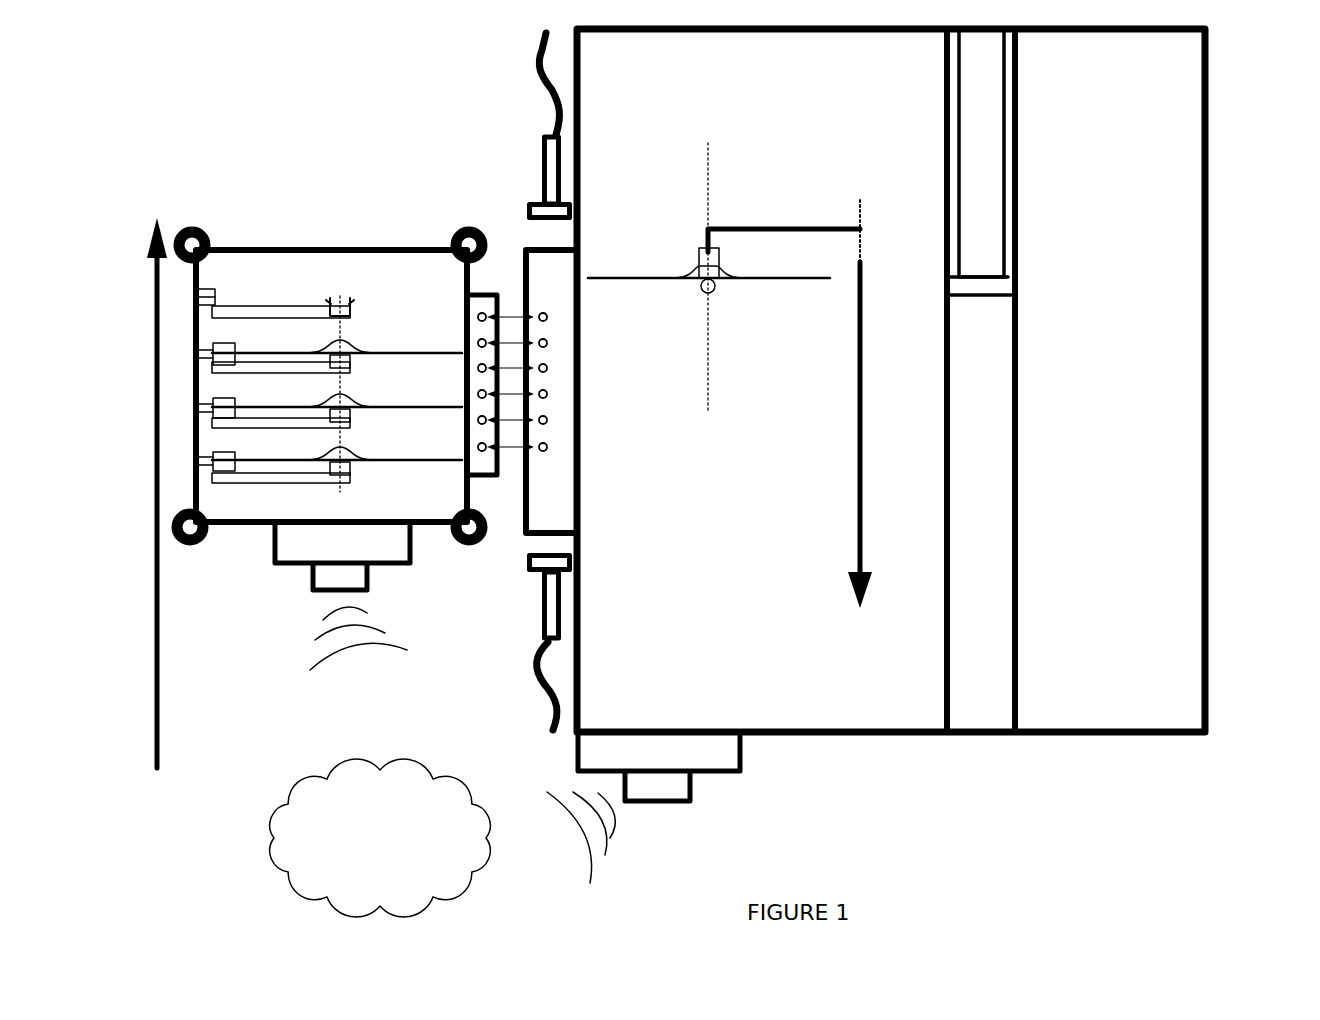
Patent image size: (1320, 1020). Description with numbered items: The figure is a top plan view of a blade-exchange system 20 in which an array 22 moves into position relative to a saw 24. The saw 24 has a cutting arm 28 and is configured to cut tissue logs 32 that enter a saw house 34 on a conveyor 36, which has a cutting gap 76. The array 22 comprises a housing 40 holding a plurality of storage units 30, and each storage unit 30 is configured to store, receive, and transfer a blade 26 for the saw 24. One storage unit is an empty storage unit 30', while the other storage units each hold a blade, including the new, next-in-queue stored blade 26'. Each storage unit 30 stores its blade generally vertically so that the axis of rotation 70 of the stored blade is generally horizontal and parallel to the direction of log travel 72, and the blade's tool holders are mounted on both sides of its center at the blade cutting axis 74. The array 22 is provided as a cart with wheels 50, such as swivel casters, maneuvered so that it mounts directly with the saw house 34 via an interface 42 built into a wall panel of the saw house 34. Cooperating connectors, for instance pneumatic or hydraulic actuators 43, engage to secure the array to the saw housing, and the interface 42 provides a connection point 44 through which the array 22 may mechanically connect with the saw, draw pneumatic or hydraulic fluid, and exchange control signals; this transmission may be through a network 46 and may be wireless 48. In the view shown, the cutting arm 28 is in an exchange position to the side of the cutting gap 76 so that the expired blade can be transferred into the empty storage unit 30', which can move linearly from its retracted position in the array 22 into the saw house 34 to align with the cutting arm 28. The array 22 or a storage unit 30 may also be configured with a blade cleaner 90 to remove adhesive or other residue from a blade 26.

The system 20 is at (325, 126).
The array 22 is at (258, 245).
The saw 24 is at (1210, 292).
The blade 26 is at (529, 387).
The next in queue stored blade 26' is at (337, 369).
The cutting arm 28 is at (800, 226).
The storage unit 30 is at (281, 436).
The empty storage unit 30' is at (281, 327).
The tissue log 32 is at (968, 174).
The saw house 34 is at (1073, 397).
The conveyor 36 is at (1020, 206).
The housing 40 is at (345, 245).
The interface 42 is at (525, 507).
The pneumatic or hydraulic actuators 43 is at (541, 152).
The connection point 44 is at (484, 293).
The network 46 is at (371, 857).
The wireless transmission 48 is at (320, 658).
The wheels 50 is at (182, 234).
The axis of rotation 70 is at (352, 300).
The direction of log travel 72 is at (866, 557).
The blade cutting axis 74 is at (712, 376).
The cutting gap 76 is at (1020, 292).
The blade cleaner 90 is at (215, 318).